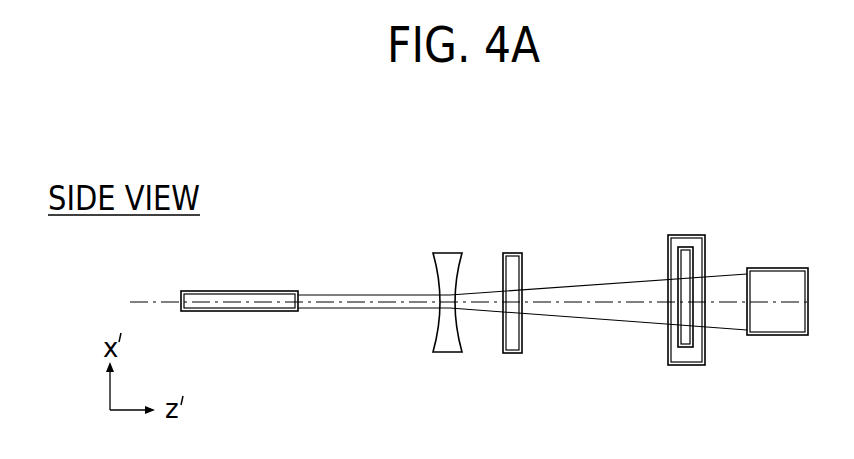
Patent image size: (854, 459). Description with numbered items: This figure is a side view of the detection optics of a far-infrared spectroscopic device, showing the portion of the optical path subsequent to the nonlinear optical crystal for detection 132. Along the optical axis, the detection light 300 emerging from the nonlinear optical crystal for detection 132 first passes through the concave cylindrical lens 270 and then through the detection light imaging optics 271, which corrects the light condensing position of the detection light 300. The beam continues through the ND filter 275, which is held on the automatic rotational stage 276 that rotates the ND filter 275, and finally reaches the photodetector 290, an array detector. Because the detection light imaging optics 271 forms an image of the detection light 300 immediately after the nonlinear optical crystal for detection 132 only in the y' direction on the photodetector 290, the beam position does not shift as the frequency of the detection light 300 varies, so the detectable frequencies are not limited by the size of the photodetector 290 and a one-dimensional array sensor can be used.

The nonlinear optical crystal for detection 132 is at (267, 291).
The detection light 300 is at (360, 292).
The concave cylindrical lens 270 is at (442, 253).
The detection light imaging optics 271 is at (512, 253).
The ND filter 275 is at (687, 247).
The automatic rotational stage 276 is at (687, 366).
The photodetector 290 is at (775, 268).